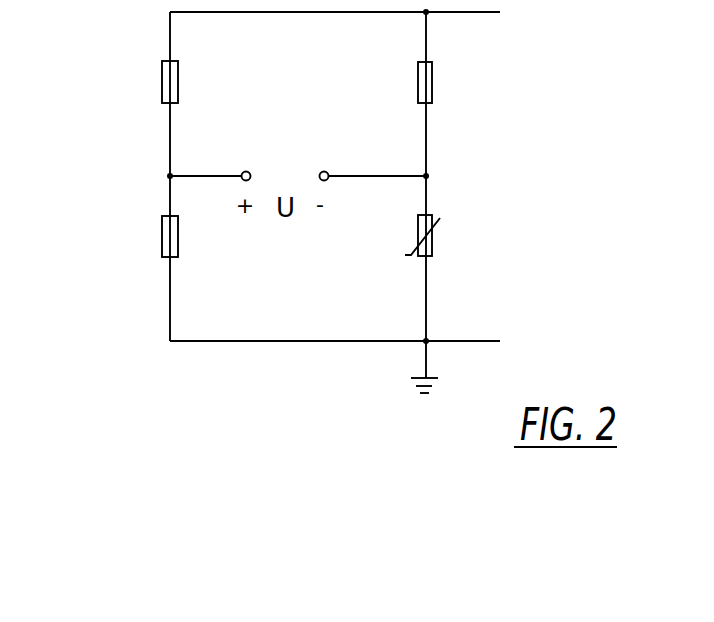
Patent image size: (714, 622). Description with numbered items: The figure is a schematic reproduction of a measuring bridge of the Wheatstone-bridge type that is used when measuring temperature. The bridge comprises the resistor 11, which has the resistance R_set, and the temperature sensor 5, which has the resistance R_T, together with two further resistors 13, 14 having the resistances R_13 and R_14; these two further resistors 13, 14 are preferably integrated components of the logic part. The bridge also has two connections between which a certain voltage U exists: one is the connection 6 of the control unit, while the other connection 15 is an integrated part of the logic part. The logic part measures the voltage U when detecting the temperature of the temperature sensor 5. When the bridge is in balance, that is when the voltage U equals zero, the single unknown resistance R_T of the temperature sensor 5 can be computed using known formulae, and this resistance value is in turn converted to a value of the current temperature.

The resistor 13 is at (168, 76).
The resistor 14 is at (167, 225).
The connection 15 is at (243, 173).
The resistor 11 is at (432, 72).
The connection 6 is at (328, 173).
The temperature sensor 5 is at (430, 215).